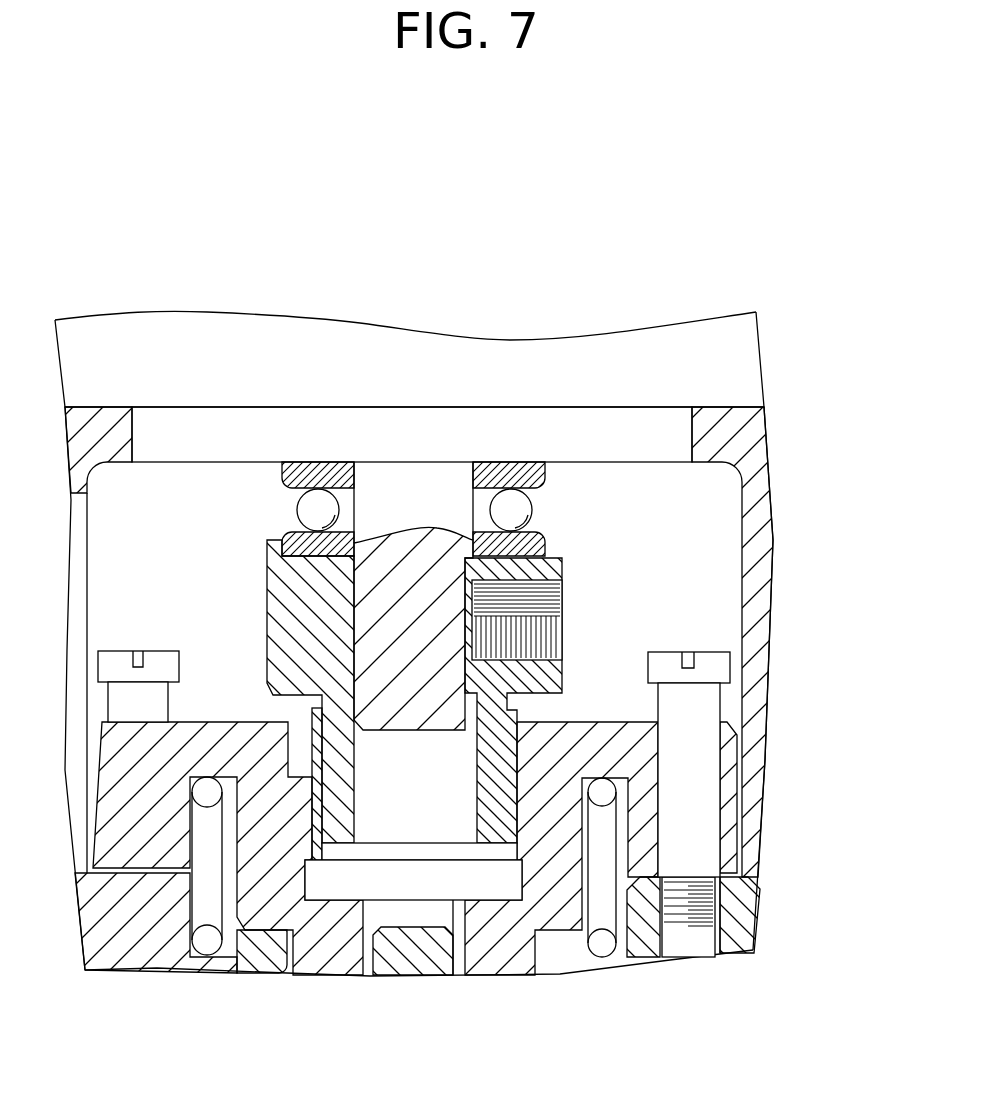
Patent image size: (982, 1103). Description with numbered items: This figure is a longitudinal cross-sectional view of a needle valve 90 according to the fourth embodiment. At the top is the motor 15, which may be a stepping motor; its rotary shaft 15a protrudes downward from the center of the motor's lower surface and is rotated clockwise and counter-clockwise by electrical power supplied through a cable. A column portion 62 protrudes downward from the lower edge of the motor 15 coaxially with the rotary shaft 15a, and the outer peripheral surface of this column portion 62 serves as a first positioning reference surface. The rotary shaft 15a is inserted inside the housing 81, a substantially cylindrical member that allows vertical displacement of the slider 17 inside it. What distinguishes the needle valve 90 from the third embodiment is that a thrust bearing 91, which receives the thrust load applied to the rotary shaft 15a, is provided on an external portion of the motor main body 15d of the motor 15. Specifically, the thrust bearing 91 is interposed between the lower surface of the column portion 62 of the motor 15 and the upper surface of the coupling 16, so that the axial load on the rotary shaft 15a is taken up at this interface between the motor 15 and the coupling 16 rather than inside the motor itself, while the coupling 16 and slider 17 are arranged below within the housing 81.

The motor 15 is at (730, 343).
The rotary shaft 15a is at (380, 630).
The motor main body 15d is at (577, 358).
The coupling 16 is at (557, 568).
The slider 17 is at (610, 753).
The column portion 62 is at (660, 420).
The housing 81 is at (765, 507).
The needle valve 90 is at (790, 244).
The thrust bearing 91 is at (545, 480).